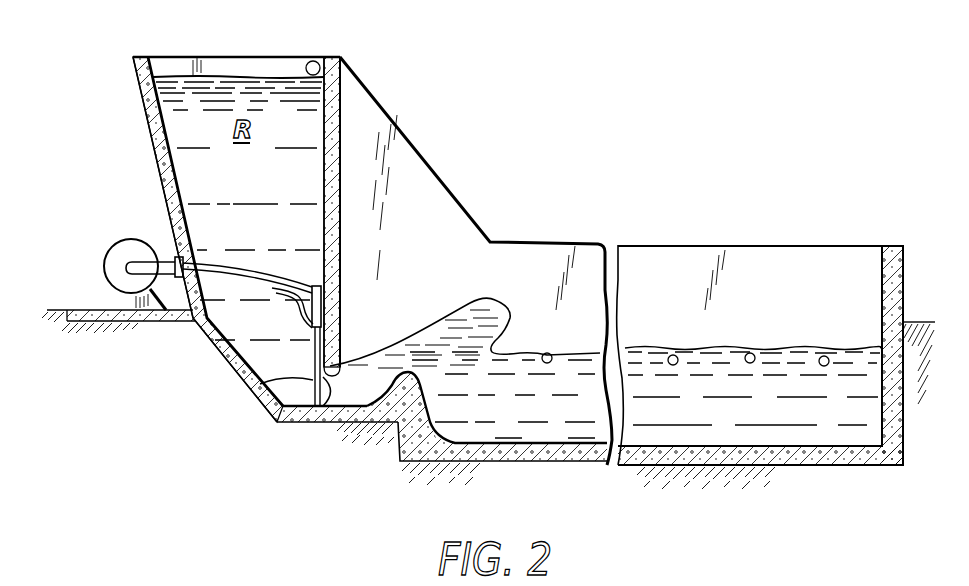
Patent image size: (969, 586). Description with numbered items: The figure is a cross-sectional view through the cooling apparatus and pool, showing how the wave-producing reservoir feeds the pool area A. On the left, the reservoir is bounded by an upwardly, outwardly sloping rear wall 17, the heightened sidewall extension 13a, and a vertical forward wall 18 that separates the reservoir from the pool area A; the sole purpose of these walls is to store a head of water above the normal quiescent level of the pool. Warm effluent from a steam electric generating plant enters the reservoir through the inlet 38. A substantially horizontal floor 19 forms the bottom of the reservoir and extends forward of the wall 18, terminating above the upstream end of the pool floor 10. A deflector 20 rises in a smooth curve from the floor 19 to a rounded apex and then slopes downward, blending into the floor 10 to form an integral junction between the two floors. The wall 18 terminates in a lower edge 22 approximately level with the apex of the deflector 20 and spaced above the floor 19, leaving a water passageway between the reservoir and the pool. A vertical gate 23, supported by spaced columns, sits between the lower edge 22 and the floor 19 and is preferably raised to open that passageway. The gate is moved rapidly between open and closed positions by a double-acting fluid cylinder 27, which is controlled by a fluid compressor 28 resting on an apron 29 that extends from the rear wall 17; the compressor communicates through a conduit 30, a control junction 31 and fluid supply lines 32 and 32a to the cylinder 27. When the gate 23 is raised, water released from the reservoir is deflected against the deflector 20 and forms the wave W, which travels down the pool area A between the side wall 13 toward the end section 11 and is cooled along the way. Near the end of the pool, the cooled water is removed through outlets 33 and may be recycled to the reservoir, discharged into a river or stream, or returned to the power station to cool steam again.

The floor 10 is at (528, 461).
The end section 11 is at (893, 253).
The side wall 13 is at (702, 229).
The sidewall extension 13a is at (170, 63).
The rear wall 17 is at (158, 152).
The forward wall 18 is at (343, 107).
The floor 19 is at (284, 422).
The deflector 20 is at (410, 384).
The lower edge 22 is at (326, 422).
The vertical gate 23 is at (254, 385).
The fluid cylinder 27 is at (317, 286).
The fluid compressor 28 is at (118, 252).
The apron 29 is at (147, 322).
The conduit 30 is at (153, 262).
The control junction 31 is at (181, 320).
The fluid supply line 32 is at (229, 273).
The fluid supply line 32a is at (293, 303).
The outlets 33 is at (562, 343).
The inlet 38 is at (314, 61).
The wave W is at (490, 312).
The pool area A is at (546, 304).